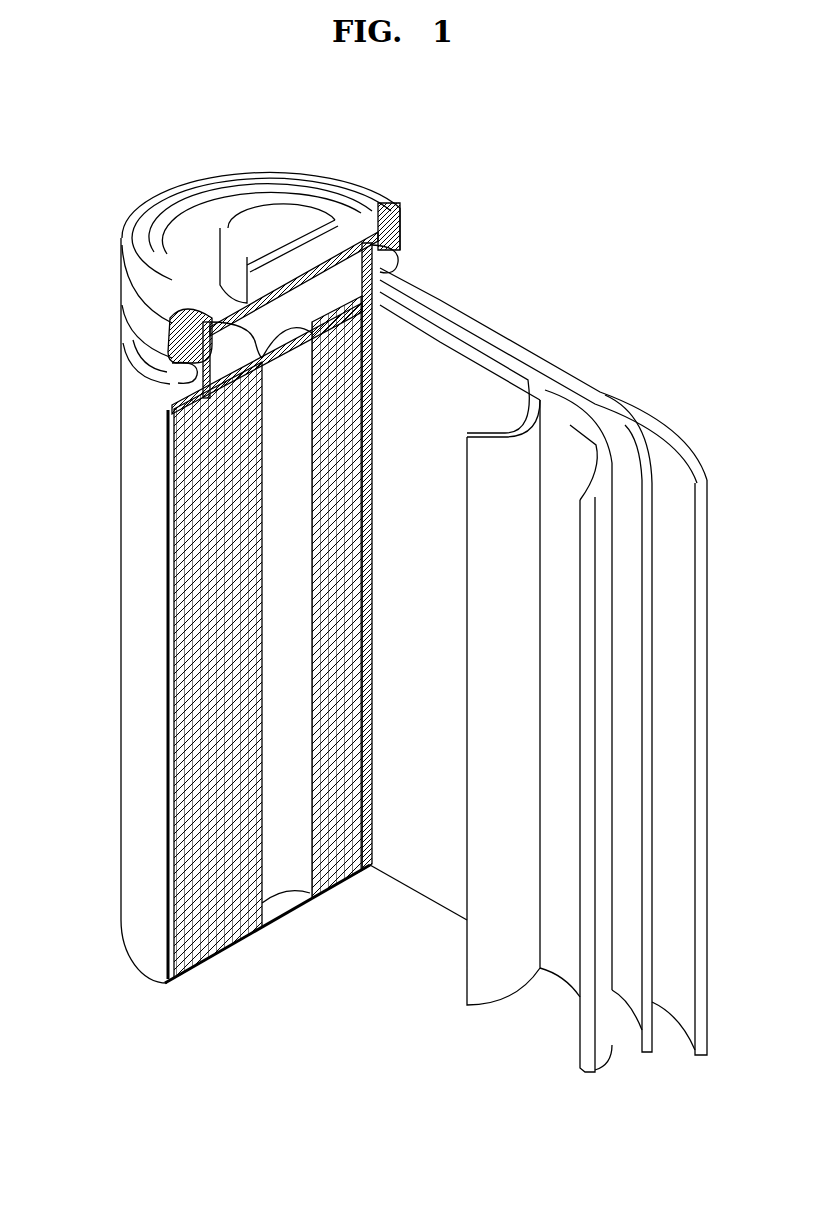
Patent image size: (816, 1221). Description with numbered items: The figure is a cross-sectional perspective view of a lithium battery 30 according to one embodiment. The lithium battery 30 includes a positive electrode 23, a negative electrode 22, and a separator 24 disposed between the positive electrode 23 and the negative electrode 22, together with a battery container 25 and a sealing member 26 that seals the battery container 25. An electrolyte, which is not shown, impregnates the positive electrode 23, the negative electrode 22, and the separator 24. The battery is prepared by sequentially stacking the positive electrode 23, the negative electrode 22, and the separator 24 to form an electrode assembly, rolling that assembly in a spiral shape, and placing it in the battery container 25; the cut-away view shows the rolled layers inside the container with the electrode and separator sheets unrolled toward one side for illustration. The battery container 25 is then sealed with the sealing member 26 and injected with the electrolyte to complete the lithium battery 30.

The lithium battery 30 is at (352, 109).
The battery container 25 is at (128, 627).
The sealing member 26 is at (255, 222).
The separator 24 is at (508, 437).
The positive electrode 23 is at (602, 447).
The negative electrode 22 is at (682, 448).